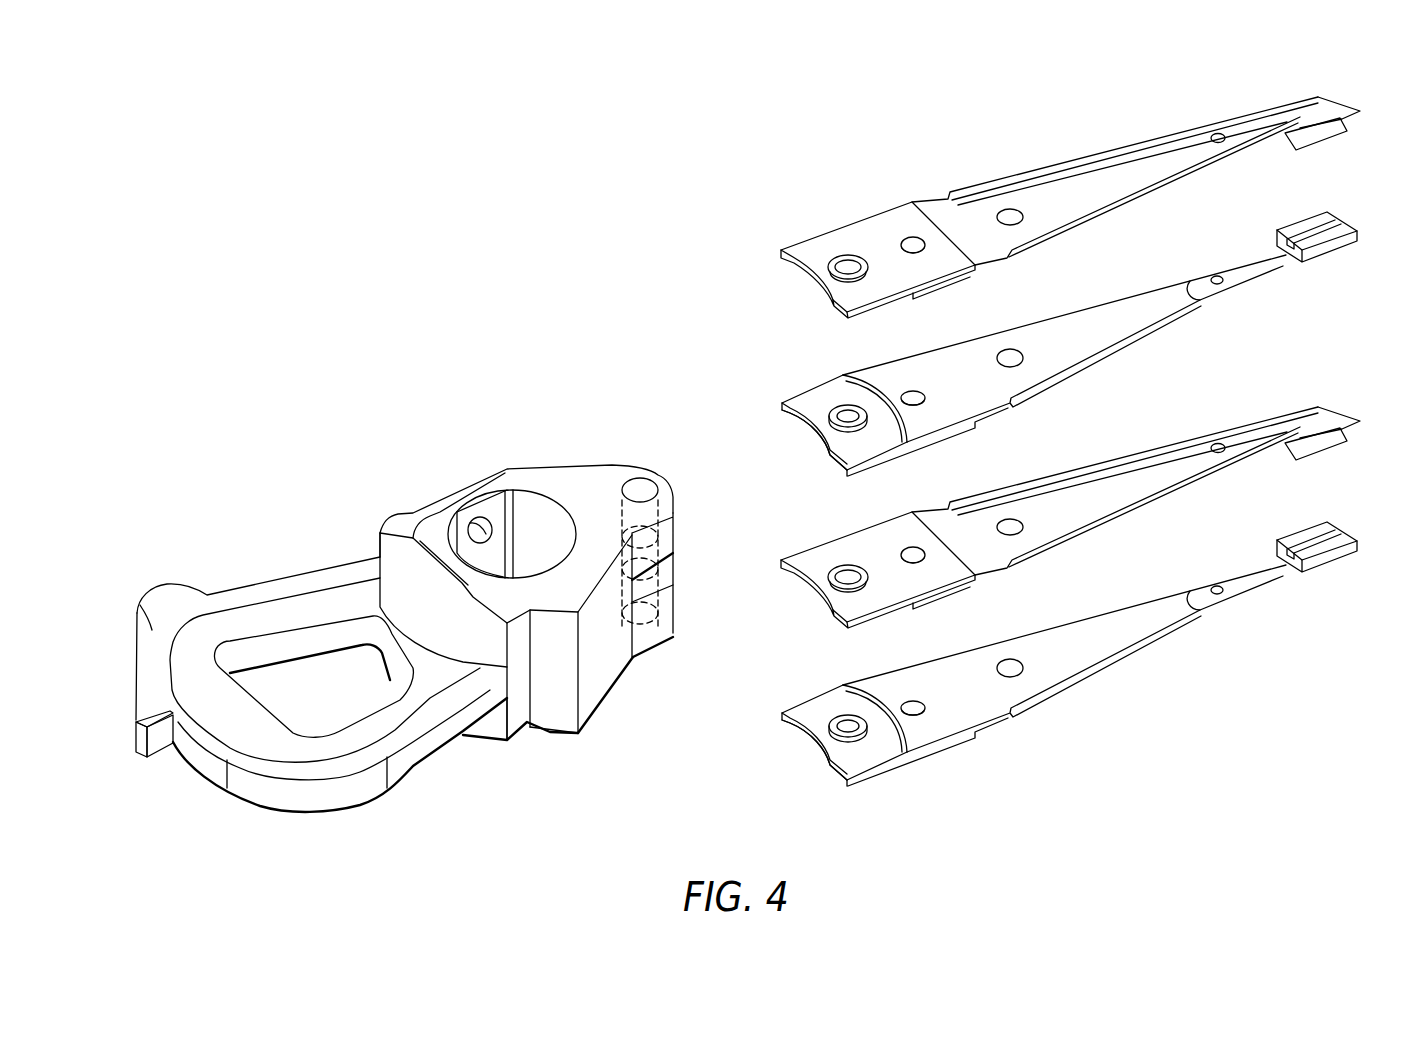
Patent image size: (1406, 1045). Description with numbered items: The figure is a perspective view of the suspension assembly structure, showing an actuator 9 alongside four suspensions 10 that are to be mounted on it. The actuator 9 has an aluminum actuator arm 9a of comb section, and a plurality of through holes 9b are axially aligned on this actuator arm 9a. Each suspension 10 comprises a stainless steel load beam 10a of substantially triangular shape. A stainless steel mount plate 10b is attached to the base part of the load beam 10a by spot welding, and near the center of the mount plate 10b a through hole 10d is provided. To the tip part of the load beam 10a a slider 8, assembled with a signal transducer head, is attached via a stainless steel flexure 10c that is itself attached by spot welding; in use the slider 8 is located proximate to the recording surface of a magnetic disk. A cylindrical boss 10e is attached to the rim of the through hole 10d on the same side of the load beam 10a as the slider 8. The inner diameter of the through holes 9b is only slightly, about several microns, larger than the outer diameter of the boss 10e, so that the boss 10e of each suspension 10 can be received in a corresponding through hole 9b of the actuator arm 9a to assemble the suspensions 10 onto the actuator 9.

The slider 8 is at (1335, 138).
The actuator 9 is at (578, 472).
The actuator arm 9a is at (670, 608).
The through holes 9b is at (640, 478).
The suspension 10 is at (1076, 430).
The load beam 10a is at (1054, 185).
The mount plate 10b is at (875, 237).
The through hole 10d is at (848, 268).
The flexure 10c is at (1334, 110).
The boss 10e is at (818, 441).